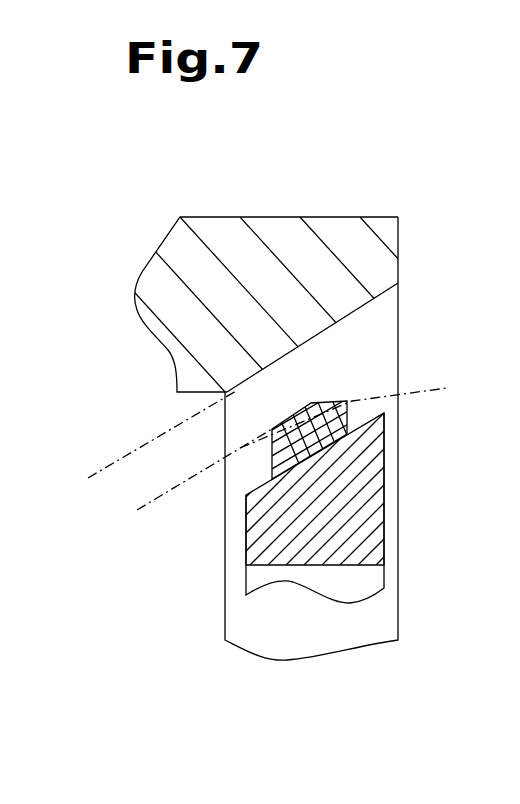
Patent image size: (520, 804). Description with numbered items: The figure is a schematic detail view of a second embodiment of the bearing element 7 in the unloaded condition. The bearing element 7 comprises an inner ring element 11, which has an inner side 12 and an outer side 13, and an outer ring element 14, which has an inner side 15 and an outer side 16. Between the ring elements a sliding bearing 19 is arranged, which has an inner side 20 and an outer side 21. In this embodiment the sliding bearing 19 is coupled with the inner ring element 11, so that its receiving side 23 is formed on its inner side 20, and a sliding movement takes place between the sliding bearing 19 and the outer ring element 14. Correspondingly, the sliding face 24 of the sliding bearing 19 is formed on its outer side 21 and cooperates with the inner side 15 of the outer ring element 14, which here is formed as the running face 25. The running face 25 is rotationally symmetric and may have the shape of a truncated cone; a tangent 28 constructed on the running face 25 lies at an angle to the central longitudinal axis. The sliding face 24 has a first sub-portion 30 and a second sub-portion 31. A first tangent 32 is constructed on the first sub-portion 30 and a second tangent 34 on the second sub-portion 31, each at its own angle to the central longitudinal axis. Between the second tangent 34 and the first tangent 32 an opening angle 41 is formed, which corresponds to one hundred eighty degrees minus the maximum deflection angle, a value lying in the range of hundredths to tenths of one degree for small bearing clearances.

The bearing element 7 is at (142, 198).
The inner ring element 11 is at (332, 518).
The inner side of the inner ring element 12 is at (272, 598).
The outer side of the inner ring element 13 is at (257, 479).
The outer ring element 14 is at (280, 240).
The inner side of the outer ring element 15 is at (389, 292).
The outer side of the outer ring element 16 is at (240, 215).
The first sliding bearing 19 is at (312, 403).
The inner side of the sliding bearing 20 is at (335, 450).
The outer side of the sliding bearing 21 is at (335, 390).
The receiving side 23 is at (290, 477).
The first sliding face 24 is at (291, 397).
The running face 25 is at (370, 320).
The tangent 28 is at (113, 458).
The first sub-portion 30 is at (275, 402).
The second sub-portion 31 is at (380, 275).
The first tangent 32 is at (137, 510).
The second tangent 34 is at (428, 392).
The opening angle 41 is at (278, 444).